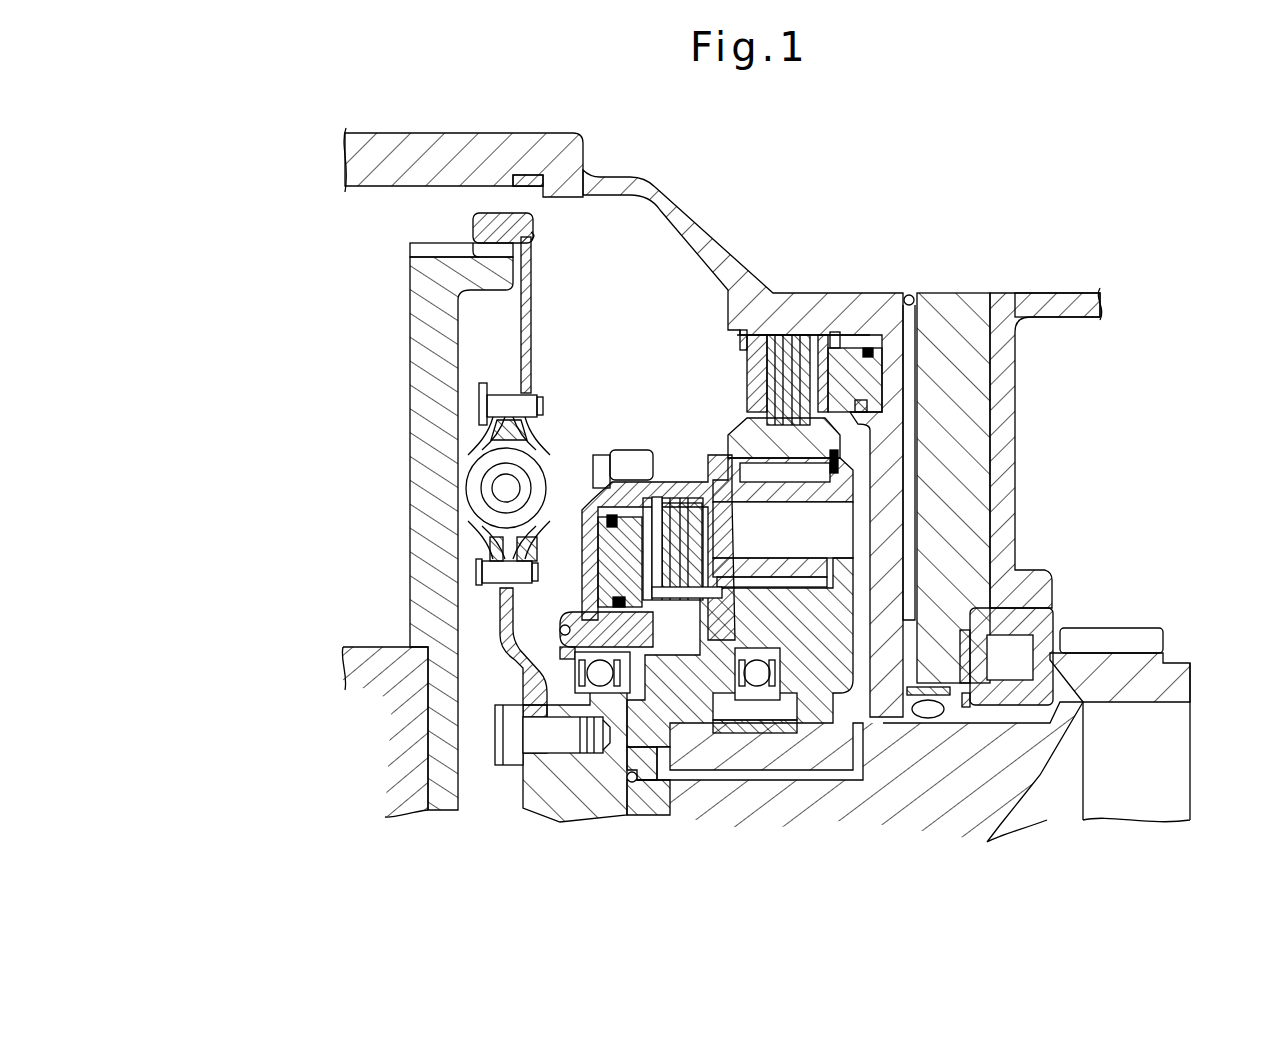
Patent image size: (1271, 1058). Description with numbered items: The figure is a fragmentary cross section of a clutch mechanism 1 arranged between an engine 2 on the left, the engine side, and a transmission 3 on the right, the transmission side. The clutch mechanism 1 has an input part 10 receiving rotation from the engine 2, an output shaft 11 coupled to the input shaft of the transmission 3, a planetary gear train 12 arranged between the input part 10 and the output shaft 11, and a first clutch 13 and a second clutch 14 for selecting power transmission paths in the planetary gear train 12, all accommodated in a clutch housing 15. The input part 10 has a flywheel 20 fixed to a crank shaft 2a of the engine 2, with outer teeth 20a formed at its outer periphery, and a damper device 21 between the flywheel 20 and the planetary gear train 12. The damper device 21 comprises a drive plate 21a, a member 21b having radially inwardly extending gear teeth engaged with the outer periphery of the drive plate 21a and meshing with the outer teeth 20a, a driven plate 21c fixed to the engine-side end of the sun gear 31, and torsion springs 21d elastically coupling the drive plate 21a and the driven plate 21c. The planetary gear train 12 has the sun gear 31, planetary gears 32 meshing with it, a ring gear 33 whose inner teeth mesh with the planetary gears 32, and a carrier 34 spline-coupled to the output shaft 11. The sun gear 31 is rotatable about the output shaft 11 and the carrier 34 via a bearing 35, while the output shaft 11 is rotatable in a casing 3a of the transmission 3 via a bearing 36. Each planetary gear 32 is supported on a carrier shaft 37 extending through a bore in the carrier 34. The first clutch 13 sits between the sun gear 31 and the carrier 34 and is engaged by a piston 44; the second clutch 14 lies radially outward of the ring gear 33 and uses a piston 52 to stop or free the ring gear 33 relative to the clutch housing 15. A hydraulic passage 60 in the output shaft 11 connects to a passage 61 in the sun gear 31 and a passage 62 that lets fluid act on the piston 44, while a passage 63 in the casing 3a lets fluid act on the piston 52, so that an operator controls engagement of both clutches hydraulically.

The clutch mechanism 1 is at (743, 440).
The engine 2 is at (406, 472).
The crank shaft 2a is at (355, 655).
The transmission 3 is at (1095, 414).
The casing 3a is at (1061, 307).
The input part 10 is at (482, 405).
The output shaft 11 is at (1170, 689).
The planetary gear train 12 is at (638, 513).
The first clutch 13 is at (594, 508).
The second clutch 14 is at (820, 323).
The clutch housing 15 is at (663, 212).
The flywheel 20 is at (423, 310).
The outer teeth 20a is at (447, 249).
The damper device 21 is at (442, 484).
The drive plate 21a is at (527, 270).
The member 21b is at (480, 250).
The driven plate 21c is at (505, 617).
The torsion springs 21d is at (477, 488).
The sun gear 31 is at (562, 786).
The planetary gears 32 is at (855, 468).
The ring gear 33 is at (742, 445).
The carrier 34 is at (875, 722).
The bearing 35 is at (756, 678).
The bearing 36 is at (1023, 647).
The carrier shafts 37 is at (840, 520).
The piston 44 is at (622, 523).
The piston 52 is at (907, 293).
The hydraulic passage 60 is at (677, 778).
The passage 61 is at (567, 702).
The passage 62 is at (582, 627).
The passage 63 is at (912, 345).